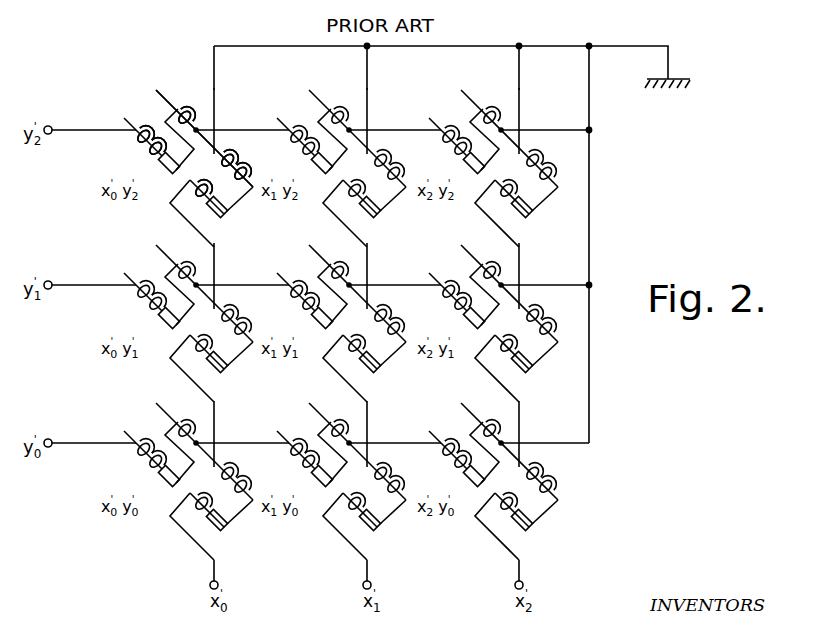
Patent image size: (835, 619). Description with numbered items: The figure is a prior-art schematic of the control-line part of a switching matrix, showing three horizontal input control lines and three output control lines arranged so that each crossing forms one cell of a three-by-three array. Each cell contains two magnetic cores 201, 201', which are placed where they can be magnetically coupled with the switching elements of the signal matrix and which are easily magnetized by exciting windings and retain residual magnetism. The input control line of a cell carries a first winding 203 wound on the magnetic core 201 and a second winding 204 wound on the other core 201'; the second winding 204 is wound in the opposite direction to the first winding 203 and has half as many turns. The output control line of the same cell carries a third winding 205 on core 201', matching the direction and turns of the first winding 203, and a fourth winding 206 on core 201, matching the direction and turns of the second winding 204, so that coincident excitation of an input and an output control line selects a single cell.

The magnetic core 201 is at (123, 110).
The magnetic core 201' is at (183, 113).
The first winding 203 is at (147, 153).
The second winding 204 is at (185, 106).
The third winding 205 is at (239, 154).
The fourth winding 206 is at (200, 203).